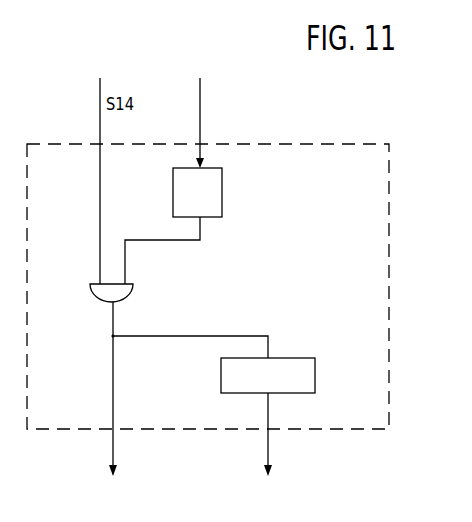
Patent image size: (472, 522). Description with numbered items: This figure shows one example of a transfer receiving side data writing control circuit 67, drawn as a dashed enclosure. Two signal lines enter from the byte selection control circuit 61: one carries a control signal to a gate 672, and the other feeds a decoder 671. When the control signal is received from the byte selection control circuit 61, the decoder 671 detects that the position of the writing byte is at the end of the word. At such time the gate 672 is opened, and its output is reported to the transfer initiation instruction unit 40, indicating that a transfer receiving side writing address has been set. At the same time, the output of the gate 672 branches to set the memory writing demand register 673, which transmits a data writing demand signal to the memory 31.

The byte selection control circuit 61 is at (149, 168).
The transfer receiving side data writing control circuit 67 is at (375, 144).
The decoder 671 is at (186, 217).
The gate 672 is at (130, 302).
The memory writing demand register 673 is at (230, 364).
The transfer initiation instruction unit 40 is at (115, 417).
The memory 31 is at (282, 446).